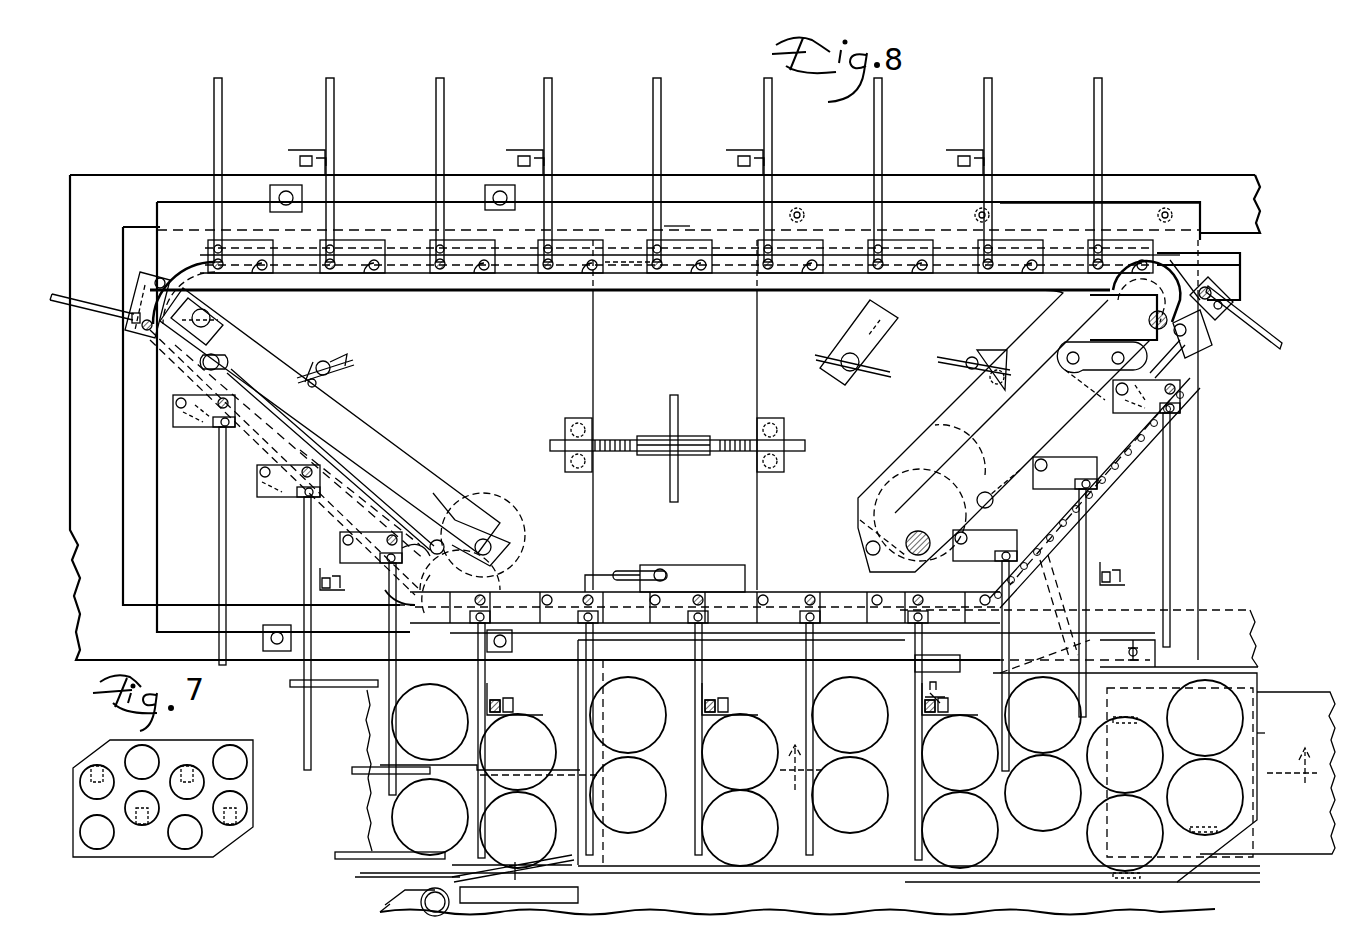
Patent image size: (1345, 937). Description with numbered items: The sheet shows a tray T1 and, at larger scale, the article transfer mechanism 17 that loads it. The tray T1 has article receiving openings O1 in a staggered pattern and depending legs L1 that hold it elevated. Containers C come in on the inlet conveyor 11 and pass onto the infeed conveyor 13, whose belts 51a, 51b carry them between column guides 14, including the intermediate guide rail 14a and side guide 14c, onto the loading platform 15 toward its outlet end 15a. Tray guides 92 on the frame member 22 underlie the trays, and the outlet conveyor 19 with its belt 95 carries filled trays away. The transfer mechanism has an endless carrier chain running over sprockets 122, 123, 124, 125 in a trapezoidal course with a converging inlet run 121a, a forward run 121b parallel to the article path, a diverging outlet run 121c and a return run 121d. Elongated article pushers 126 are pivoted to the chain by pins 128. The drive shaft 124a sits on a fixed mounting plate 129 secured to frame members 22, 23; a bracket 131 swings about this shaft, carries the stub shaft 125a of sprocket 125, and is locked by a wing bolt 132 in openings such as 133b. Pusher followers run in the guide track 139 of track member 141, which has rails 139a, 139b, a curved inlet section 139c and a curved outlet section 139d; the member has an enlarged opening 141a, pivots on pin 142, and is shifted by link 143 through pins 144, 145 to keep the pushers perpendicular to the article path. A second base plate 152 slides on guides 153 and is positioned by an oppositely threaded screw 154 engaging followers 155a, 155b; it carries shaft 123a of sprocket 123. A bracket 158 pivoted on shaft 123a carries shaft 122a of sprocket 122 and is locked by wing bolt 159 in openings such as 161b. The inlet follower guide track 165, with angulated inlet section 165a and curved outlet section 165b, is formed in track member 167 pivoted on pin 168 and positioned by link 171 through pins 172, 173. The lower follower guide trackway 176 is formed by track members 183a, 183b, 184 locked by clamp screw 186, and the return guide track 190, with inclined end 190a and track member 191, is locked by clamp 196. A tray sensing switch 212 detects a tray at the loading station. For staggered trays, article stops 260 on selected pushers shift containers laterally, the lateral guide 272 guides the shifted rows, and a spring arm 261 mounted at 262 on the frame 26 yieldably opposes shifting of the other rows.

In FIG. 8, the inlet conveyor 11 is at (1048, 779).
In FIG. 8, the infeed conveyor mechanism 13 is at (350, 885).
In FIG. 8, the column guides 14 is at (317, 862).
In FIG. 8, the intermediate guide rail 14a is at (355, 770).
In FIG. 8, the side guide 14c is at (360, 688).
In FIG. 8, the loading platform 15 is at (840, 900).
In FIG. 8, the outlet end of loading platform 15a is at (930, 697).
In FIG. 8, the article transfer mechanism 17 is at (593, 126).
In FIG. 8, the outlet conveyor mechanism 19 is at (1303, 676).
In FIG. 8, the longitudinal frame member 22 is at (1228, 620).
In FIG. 8, the frame member 23 is at (1128, 185).
In FIG. 8, the frame 26 is at (78, 236).
In FIG. 8, the endless belt 51a is at (371, 801).
In FIG. 8, the endless belt 51b is at (370, 733).
In FIG. 8, the tray guides 92 is at (1163, 680).
In FIG. 8, the belt 95 is at (1280, 842).
In FIG. 8, the inlet run 121a is at (361, 510).
In FIG. 8, the forward run 121b is at (617, 622).
In FIG. 8, the outlet run 121c is at (1110, 455).
In FIG. 8, the return run 121d is at (628, 272).
In FIG. 8, the carrier chain sprocket 122 is at (255, 312).
In FIG. 8, the sprocket shaft 122a is at (157, 285).
In FIG. 8, the carrier chain sprocket 123 is at (503, 493).
In FIG. 8, the sprocket shaft 123a is at (493, 530).
In FIG. 8, the carrier chain sprocket 124 is at (864, 500).
In FIG. 8, the drive shaft 124a is at (870, 528).
In FIG. 8, the carrier chain sprocket 125 is at (1185, 358).
In FIG. 8, the upright stub shaft 125a is at (1236, 315).
In FIG. 8, the article pushers 126 is at (1175, 530).
In FIG. 8, the pivot pins 128 is at (987, 270).
In FIG. 8, the fixed mounting plate 129 is at (766, 340).
In FIG. 8, the elongated bracket 131 is at (945, 420).
In FIG. 8, the wing bolt 132 is at (970, 358).
In FIG. 8, the opening 133b is at (990, 378).
In FIG. 8, the guide track 139 is at (1063, 442).
In FIG. 8, the upright guide rail 139a is at (1012, 502).
In FIG. 8, the guide rail 139b is at (1068, 500).
In FIG. 8, the curved inlet section 139c is at (905, 612).
In FIG. 8, the curved outlet section 139d is at (1180, 290).
In FIG. 8, the track member 141 is at (953, 440).
In FIG. 8, the enlarged opening 141a is at (908, 463).
In FIG. 8, the pivot pin 142 is at (868, 548).
In FIG. 8, the link 143 is at (1080, 378).
In FIG. 8, the pin 144 is at (1112, 364).
In FIG. 8, the pin 145 is at (1073, 358).
In FIG. 8, the second base plate 152 is at (567, 335).
In FIG. 8, the guides 153 is at (274, 185).
In FIG. 8, the oppositely threaded screw 154 is at (662, 438).
In FIG. 8, the follower 155a is at (771, 420).
In FIG. 8, the follower 155b is at (560, 422).
In FIG. 8, the rigid bracket 158 is at (370, 450).
In FIG. 8, the wing bolt 159 is at (326, 360).
In FIG. 8, the opening 161b is at (300, 452).
In FIG. 8, the inlet follower guide track 165 is at (330, 525).
In FIG. 8, the angulated inlet section 165a is at (143, 360).
In FIG. 8, the curved outlet section 165b is at (412, 605).
In FIG. 8, the track member 167 is at (257, 445).
In FIG. 8, the pivot pin 168 is at (423, 538).
In FIG. 8, the link 171 is at (303, 517).
In FIG. 8, the pin 172 is at (258, 362).
In FIG. 8, the pin 173 is at (243, 353).
In FIG. 8, the lower follower guide trackway 176 is at (728, 607).
In FIG. 8, the track member 183a is at (750, 570).
In FIG. 8, the track member 183b is at (556, 583).
In FIG. 8, the track member 184 is at (520, 618).
In FIG. 8, the clamp screw 186 is at (660, 570).
In FIG. 8, the return guide track 190 is at (732, 254).
In FIG. 8, the inclined end 190a is at (1131, 266).
In FIG. 8, the return lower follower guide track member 191 is at (698, 224).
In FIG. 8, the clamp 196 is at (848, 345).
In FIG. 8, the tray sensing switch 212 is at (913, 667).
In FIG. 8, the article stops 260 is at (738, 716).
In FIG. 8, the spring arm 261 is at (566, 872).
In FIG. 8, the spring arm mounting 262 is at (420, 900).
In FIG. 8, the lateral container guide 272 is at (652, 876).
In FIG. 8, the container C is at (430, 705).
In FIG. 8, the legs L1 is at (1125, 722).
In FIG. 7, the legs L1 is at (233, 814).
In FIG. 7, the article receiving openings O1 is at (247, 762).
In FIG. 8, the tray T1 is at (1243, 750).
In FIG. 7, the tray T1 is at (243, 790).